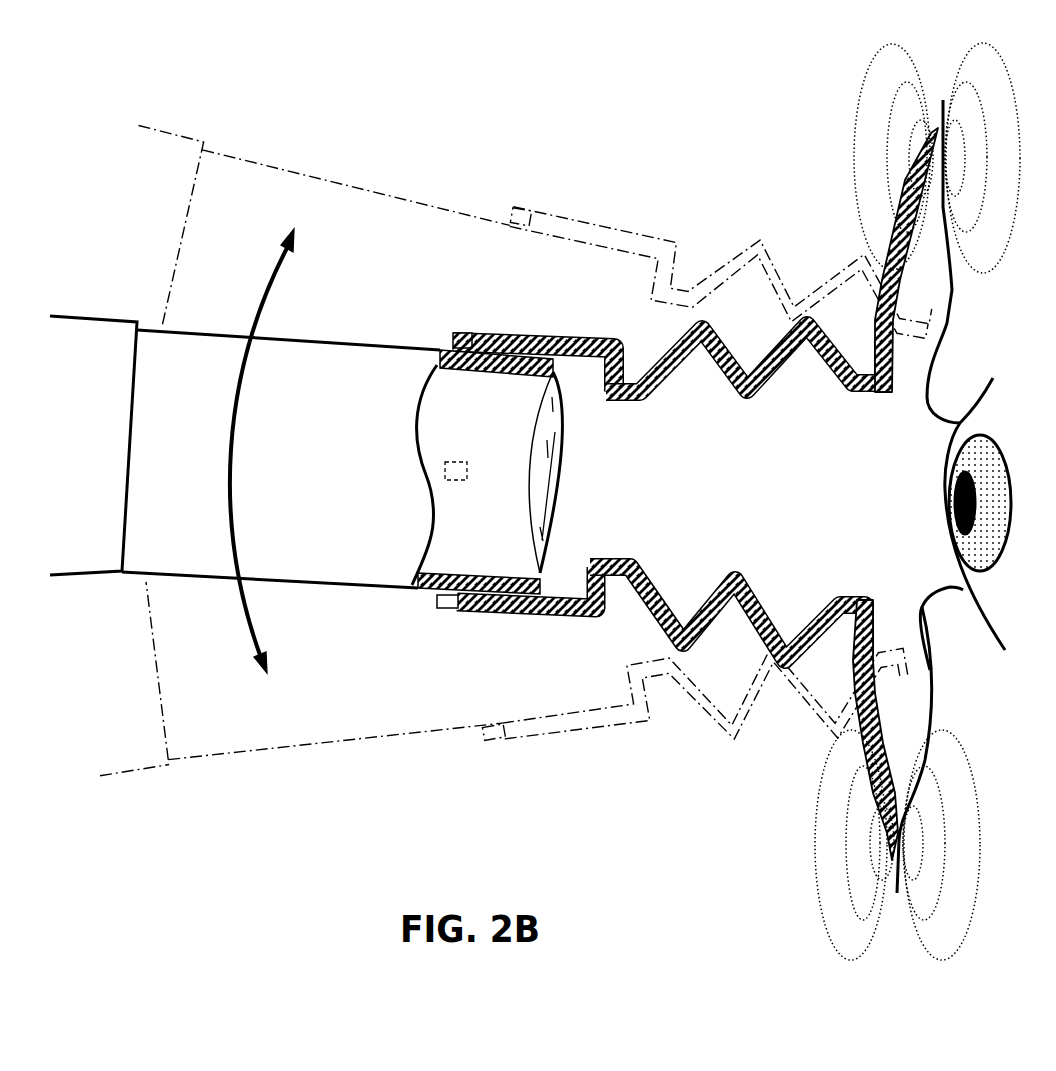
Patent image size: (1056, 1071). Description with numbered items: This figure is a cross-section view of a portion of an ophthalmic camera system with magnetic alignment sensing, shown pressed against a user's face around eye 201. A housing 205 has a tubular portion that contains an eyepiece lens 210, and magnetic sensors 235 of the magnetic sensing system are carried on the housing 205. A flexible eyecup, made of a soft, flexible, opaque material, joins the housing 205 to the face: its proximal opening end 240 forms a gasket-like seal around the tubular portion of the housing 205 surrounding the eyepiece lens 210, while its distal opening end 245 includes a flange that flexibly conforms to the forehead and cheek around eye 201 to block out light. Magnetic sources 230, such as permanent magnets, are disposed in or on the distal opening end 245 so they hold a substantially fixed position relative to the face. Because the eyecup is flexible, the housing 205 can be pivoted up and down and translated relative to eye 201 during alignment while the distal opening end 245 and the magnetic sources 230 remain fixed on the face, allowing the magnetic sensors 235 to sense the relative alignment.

The eye 201 is at (1027, 602).
The housing 205 is at (328, 341).
The eyepiece lens 210 is at (553, 460).
The magnetic sources 230 is at (930, 155).
The magnetic sensors 235 is at (466, 333).
The proximal opening end 240 is at (523, 608).
The distal opening end 245 is at (897, 318).